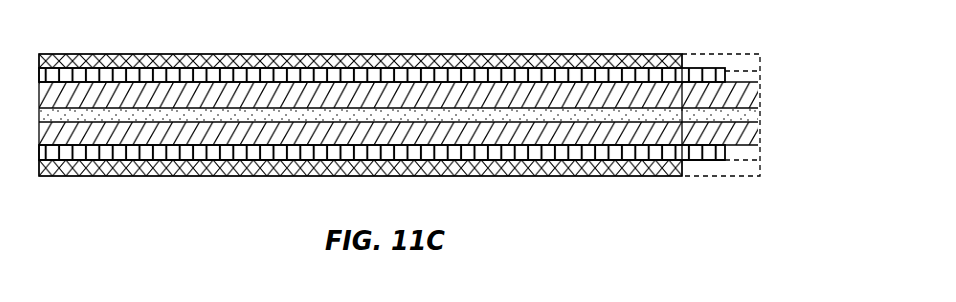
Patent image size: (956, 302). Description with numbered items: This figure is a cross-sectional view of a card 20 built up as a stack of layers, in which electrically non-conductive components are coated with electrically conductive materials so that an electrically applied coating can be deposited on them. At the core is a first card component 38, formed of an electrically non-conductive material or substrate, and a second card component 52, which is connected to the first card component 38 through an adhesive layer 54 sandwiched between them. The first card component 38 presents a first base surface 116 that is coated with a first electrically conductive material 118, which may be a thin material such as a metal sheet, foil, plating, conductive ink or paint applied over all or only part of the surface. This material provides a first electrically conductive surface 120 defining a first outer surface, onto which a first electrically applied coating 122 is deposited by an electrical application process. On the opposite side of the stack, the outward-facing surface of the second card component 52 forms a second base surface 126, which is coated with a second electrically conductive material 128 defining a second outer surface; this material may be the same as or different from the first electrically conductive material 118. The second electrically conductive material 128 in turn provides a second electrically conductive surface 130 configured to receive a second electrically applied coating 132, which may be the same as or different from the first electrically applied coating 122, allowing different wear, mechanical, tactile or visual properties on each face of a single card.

The card 20 is at (381, 208).
The first card component 38 is at (745, 102).
The second card component 52 is at (740, 133).
The adhesive layer 54 is at (742, 118).
The first base surface 116 is at (748, 70).
The first electrically conductive material 118 is at (724, 67).
The first electrically conductive surface 120 is at (690, 62).
The first electrically applied coating 122 is at (641, 57).
The second base surface 126 is at (747, 163).
The second electrically conductive material 128 is at (716, 153).
The second electrically conductive surface 130 is at (692, 162).
The second electrically applied coating 132 is at (633, 167).